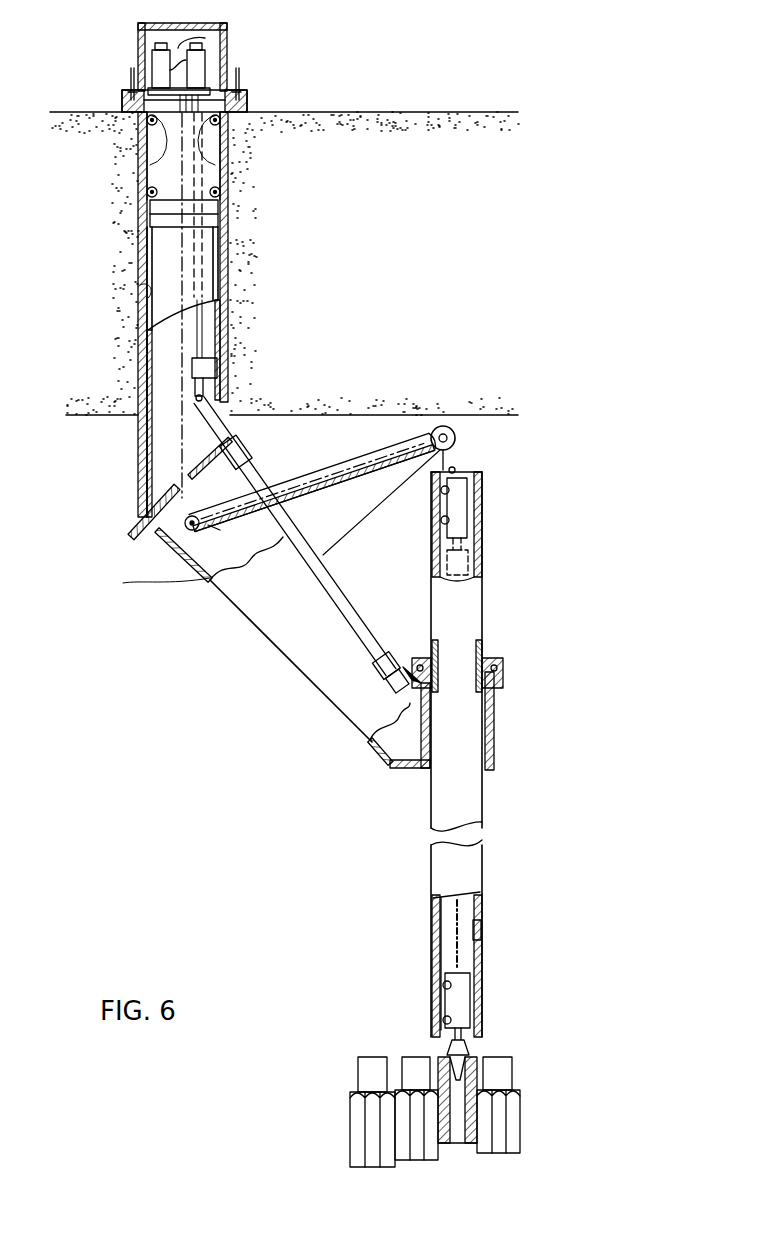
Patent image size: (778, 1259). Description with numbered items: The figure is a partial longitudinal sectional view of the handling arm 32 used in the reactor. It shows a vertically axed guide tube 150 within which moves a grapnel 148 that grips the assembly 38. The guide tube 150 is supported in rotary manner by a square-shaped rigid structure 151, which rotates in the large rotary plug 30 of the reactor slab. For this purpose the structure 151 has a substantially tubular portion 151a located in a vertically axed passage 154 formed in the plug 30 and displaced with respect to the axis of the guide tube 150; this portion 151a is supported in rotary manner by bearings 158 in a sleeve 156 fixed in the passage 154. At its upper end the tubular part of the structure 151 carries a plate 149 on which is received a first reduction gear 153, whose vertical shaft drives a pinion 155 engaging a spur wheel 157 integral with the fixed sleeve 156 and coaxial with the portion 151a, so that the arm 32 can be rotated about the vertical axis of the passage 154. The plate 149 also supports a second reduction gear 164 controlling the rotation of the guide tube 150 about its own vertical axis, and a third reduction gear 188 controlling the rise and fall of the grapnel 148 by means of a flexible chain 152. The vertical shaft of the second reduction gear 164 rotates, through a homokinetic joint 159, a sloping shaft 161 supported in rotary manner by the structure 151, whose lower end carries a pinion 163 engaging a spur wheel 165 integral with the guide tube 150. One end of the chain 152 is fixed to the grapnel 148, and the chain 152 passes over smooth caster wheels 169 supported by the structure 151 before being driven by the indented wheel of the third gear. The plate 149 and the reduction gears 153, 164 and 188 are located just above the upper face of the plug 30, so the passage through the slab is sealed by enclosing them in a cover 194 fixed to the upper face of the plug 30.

The large rotary plug 30 is at (507, 267).
The arm 32 is at (500, 780).
The fuel assembly 38 is at (522, 1090).
The grapnel 148 is at (428, 990).
The plate 149 is at (205, 148).
The guide tube 150 is at (473, 863).
The rigid structure 151 is at (303, 655).
The tubular portion 151a is at (212, 275).
The chain 152 is at (180, 453).
The first reduction gear 153 is at (162, 68).
The passage 154 is at (148, 298).
The pinion 155 is at (160, 118).
The sleeve 156 is at (148, 195).
The spur wheel 157 is at (215, 125).
The bearings 158 is at (228, 192).
The homokinetic joint 159 is at (232, 392).
The sloping shaft 161 is at (263, 477).
The pinion 163 is at (403, 680).
The second reduction gear 164 is at (198, 77).
The spur wheel 165 is at (510, 685).
The smooth caster wheels 169 is at (462, 428).
The third reduction gear 188 is at (227, 38).
The cover 194 is at (140, 26).